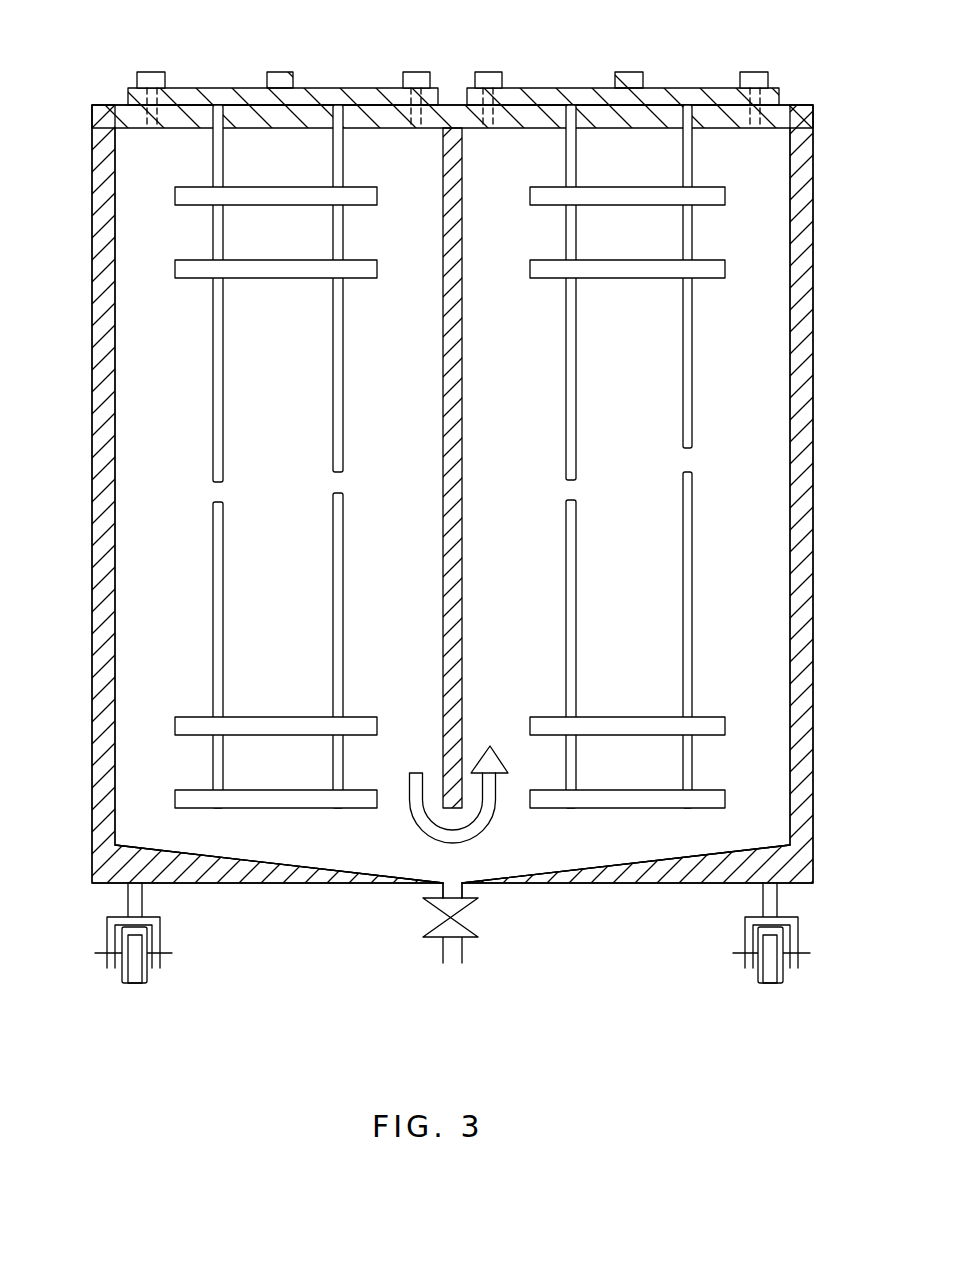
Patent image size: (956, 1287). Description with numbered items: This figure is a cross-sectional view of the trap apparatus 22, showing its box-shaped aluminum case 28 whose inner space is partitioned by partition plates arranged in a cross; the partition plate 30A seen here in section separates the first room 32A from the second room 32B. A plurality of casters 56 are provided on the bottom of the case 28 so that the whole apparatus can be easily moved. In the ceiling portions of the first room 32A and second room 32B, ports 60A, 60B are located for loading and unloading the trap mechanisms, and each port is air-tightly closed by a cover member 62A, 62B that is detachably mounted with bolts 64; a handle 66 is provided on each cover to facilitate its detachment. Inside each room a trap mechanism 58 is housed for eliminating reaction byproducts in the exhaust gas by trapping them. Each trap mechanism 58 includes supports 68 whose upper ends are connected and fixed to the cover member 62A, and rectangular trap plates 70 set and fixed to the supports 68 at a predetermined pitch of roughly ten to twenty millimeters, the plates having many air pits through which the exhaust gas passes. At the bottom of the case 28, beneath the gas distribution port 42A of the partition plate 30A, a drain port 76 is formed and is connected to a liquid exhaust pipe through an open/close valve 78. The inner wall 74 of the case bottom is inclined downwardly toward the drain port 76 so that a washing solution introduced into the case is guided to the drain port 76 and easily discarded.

The trap apparatus 22 is at (187, 1073).
The case 28 is at (805, 560).
The partition plate 30A is at (466, 428).
The first room 32A is at (190, 589).
The second room 32B is at (548, 589).
The gas distribution port 42A is at (440, 847).
The casters 56 is at (148, 972).
The trap mechanism 58 is at (200, 303).
The port 60A is at (180, 130).
The port 60B is at (706, 142).
The cover member 62A is at (351, 96).
The cover member 62B is at (684, 96).
The bolts 64 is at (151, 72).
The handle 66 is at (280, 72).
The supports 68 is at (213, 674).
The trap plates 70 is at (176, 793).
The inner wall 74 is at (266, 862).
The drain port 76 is at (455, 883).
The open/close valve 78 is at (440, 940).